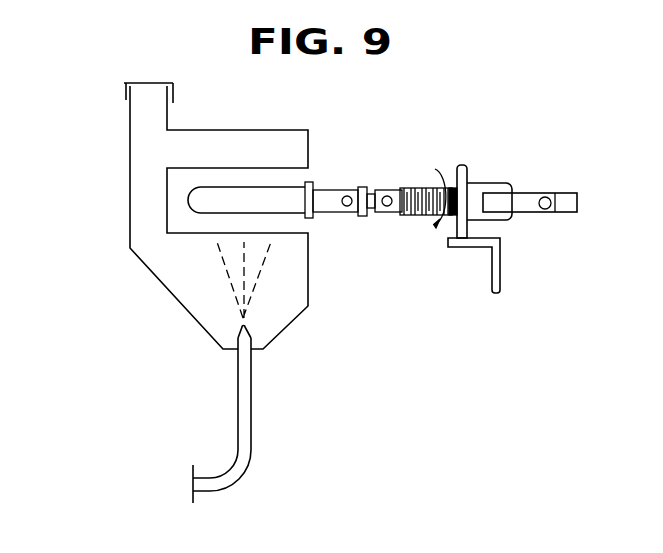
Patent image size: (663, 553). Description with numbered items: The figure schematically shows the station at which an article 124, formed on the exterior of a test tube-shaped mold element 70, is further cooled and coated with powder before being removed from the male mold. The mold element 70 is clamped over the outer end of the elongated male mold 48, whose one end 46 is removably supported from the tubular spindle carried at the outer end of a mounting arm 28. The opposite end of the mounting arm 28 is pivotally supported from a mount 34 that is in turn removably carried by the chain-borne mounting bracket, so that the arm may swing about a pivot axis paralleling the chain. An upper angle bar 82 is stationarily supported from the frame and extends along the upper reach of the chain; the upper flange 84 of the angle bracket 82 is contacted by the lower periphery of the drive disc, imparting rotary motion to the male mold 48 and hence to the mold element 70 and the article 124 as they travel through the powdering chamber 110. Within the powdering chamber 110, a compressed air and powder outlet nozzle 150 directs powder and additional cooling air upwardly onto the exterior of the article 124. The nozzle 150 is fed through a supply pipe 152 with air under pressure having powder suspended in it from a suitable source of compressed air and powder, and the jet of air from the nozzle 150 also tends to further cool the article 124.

The powdering chamber 110 is at (130, 174).
The article 124 is at (243, 195).
The test tube-shaped mold element 70 is at (331, 189).
The elongated male mold 48 is at (402, 189).
The one end of the male mold 46 is at (418, 188).
The upper flange 84 is at (465, 243).
The mounting arm 28 is at (517, 200).
The mount 34 is at (566, 193).
The upper angle bar 82 is at (502, 278).
The compressed air and powder outlet nozzle 150 is at (243, 326).
The supply pipe 152 is at (245, 410).